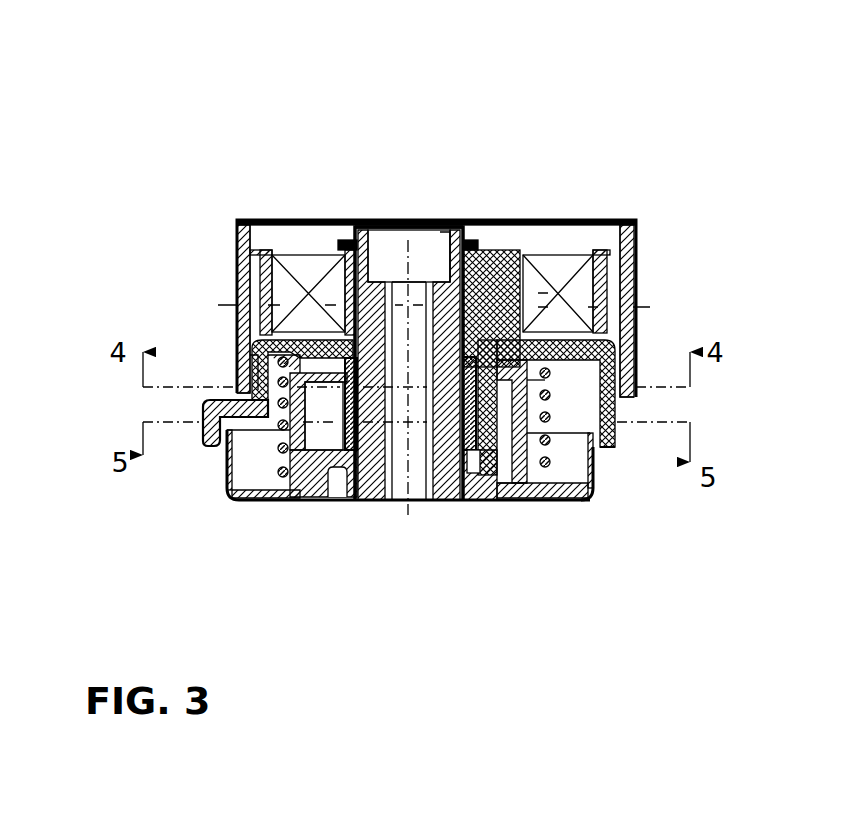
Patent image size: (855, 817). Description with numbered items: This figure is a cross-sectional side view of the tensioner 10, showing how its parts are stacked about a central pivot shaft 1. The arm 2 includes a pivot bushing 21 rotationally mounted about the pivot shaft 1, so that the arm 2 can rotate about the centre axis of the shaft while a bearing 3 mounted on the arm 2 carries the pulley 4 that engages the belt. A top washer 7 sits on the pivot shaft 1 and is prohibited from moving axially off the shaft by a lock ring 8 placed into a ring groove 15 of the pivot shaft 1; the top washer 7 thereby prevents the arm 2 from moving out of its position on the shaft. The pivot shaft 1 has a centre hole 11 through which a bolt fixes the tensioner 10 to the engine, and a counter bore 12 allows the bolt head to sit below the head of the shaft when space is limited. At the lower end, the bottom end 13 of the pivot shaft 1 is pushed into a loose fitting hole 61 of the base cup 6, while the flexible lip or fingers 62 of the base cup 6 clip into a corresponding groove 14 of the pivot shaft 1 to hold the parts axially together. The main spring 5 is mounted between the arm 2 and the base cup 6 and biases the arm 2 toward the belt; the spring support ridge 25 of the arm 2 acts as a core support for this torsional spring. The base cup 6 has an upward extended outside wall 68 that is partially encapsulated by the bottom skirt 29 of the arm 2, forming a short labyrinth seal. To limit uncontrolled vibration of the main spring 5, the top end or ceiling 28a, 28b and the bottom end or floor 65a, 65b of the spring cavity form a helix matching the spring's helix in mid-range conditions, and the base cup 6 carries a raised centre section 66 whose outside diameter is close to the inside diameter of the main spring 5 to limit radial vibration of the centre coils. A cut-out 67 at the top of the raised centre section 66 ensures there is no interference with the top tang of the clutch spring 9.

The tensioner 10 is at (163, 120).
The pivot shaft 1 is at (418, 297).
The centre hole 11 is at (390, 282).
The counter bore 12 is at (378, 232).
The ring groove 15 is at (445, 250).
The lock ring 8 is at (477, 245).
The pivot bushing 21 is at (496, 255).
The arm 2 is at (522, 255).
The bearing 3 is at (562, 262).
The top washer 7 is at (320, 230).
The pulley 4 is at (633, 237).
The top end (ceiling) of the spring cavity 28a is at (237, 345).
The top end (ceiling) of the spring cavity 28b is at (633, 370).
The spring support ridge 25 is at (237, 388).
The bottom skirt 29 is at (202, 447).
The main spring 5 is at (545, 373).
The cut-out 67 is at (533, 390).
The upward extended outside wall 68 is at (225, 473).
The bottom end (floor) of the spring cavity 65a is at (228, 497).
The bottom end (floor) of the spring cavity 65b is at (590, 463).
The raised centre section 66 is at (557, 503).
The base cup 6 is at (510, 503).
The loose fitting hole 61 is at (447, 503).
The flexible lip or fingers 62 is at (338, 503).
The bottom end 13 is at (418, 503).
The groove 14 is at (370, 503).
The clutch spring 9 is at (398, 503).